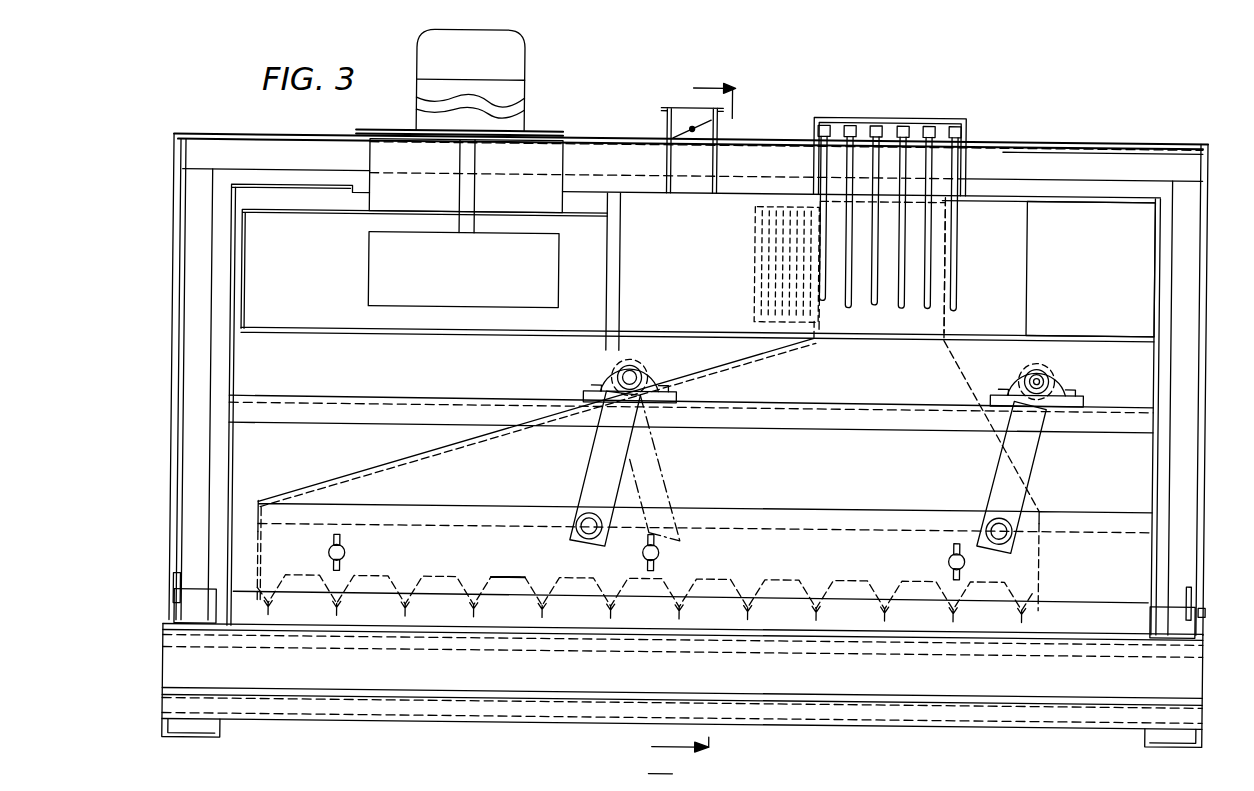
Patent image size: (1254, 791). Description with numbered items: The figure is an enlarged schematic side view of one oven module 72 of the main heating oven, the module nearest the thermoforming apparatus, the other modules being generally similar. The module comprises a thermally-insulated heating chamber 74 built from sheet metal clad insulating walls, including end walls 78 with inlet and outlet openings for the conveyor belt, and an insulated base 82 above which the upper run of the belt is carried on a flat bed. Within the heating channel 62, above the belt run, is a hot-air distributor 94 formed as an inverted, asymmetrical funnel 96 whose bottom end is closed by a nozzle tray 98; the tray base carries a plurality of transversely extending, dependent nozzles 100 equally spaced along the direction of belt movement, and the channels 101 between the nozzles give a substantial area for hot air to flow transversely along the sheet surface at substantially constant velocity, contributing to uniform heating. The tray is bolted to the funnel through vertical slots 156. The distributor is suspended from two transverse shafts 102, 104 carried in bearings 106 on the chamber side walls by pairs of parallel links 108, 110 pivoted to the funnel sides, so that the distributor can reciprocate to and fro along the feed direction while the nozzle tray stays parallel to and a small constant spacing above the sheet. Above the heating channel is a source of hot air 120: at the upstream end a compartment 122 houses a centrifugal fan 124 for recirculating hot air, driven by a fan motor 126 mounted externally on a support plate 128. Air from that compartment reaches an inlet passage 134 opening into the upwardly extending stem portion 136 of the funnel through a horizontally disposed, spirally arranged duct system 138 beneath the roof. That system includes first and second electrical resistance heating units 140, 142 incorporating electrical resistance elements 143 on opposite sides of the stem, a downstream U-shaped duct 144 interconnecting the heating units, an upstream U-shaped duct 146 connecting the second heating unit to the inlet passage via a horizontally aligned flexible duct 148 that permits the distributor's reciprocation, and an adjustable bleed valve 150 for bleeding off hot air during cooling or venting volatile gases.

The heating channel 62 is at (284, 462).
The oven module 72 is at (610, 135).
The heating chamber 74 is at (634, 140).
The end walls 78 is at (178, 405).
The base 82 is at (392, 683).
The hot-air distributor 94 is at (366, 462).
The inverted asymmetrical funnel 96 is at (733, 366).
The nozzle tray 98 is at (748, 575).
The nozzles 100 is at (480, 607).
The channels 101 is at (512, 586).
The transverse shaft 102 is at (632, 372).
The transverse shaft 104 is at (1040, 372).
The bearings 106 is at (650, 384).
The links 108 is at (585, 478).
The links 110 is at (1035, 450).
The source of hot air 120 is at (1180, 282).
The compartment 122 is at (600, 315).
The centrifugal fan 124 is at (560, 278).
The fan motor 126 is at (521, 95).
The support plate 128 is at (551, 134).
The inlet passage 134 is at (810, 328).
The stem portion 136 is at (946, 322).
The duct system 138 is at (1168, 246).
The first electrical resistance heating unit 140 is at (968, 125).
The second electrical resistance heating unit 142 is at (925, 128).
The electrical resistance elements 143 is at (910, 300).
The U-shaped duct 144 is at (1112, 280).
The U-shaped duct 146 is at (708, 273).
The flexible duct 148 is at (788, 205).
The adjustable bleed valve 150 is at (676, 108).
The vertical slots 156 is at (346, 545).